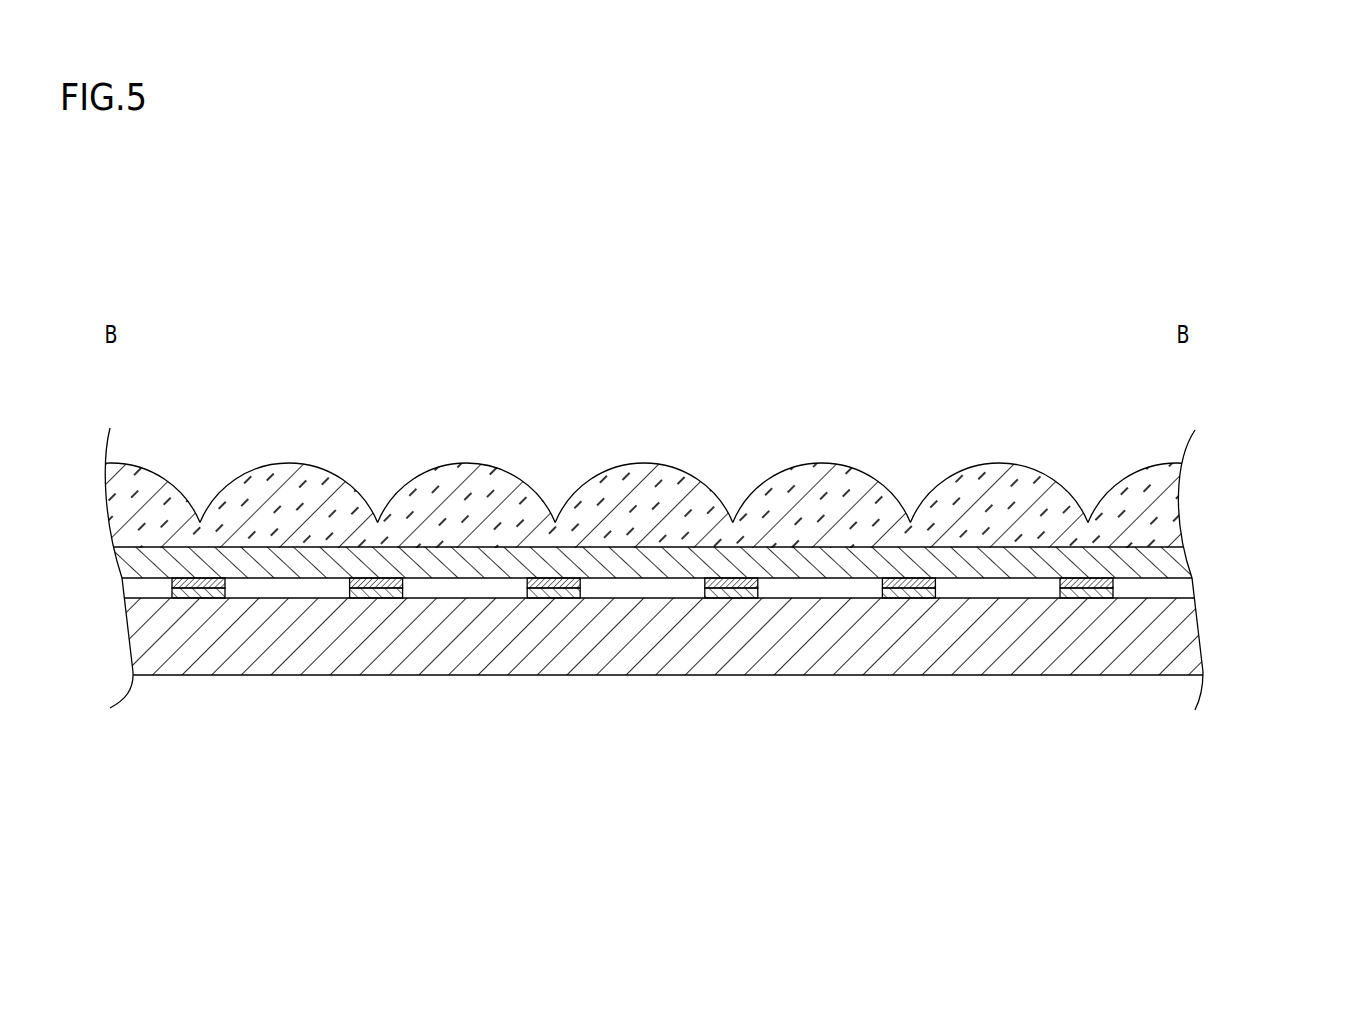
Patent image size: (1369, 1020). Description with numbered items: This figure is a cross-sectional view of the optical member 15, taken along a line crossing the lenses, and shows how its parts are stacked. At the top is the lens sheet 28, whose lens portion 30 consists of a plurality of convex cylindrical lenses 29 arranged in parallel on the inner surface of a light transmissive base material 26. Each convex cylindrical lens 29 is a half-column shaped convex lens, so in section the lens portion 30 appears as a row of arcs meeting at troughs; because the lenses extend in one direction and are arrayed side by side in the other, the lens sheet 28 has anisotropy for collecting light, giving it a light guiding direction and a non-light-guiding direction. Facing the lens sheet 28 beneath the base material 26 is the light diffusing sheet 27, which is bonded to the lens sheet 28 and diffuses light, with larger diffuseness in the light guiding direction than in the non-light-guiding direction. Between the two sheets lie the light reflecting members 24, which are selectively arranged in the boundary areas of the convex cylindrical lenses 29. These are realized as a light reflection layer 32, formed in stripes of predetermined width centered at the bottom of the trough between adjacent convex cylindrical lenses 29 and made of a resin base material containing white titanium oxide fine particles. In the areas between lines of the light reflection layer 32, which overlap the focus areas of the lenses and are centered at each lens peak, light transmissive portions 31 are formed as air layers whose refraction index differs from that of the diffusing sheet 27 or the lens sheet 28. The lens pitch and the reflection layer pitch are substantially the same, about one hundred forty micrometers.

The optical member 15 is at (1300, 568).
The light reflecting member 24 is at (208, 578).
The light transmissive base material 26 is at (133, 563).
The light diffusing sheet 27 is at (1177, 635).
The lens sheet 28 is at (1198, 562).
The convex cylindrical lens 29 is at (664, 497).
The lens portion 30 is at (887, 310).
The light transmissive portion 31 is at (465, 591).
The light reflection layer 32 is at (553, 593).